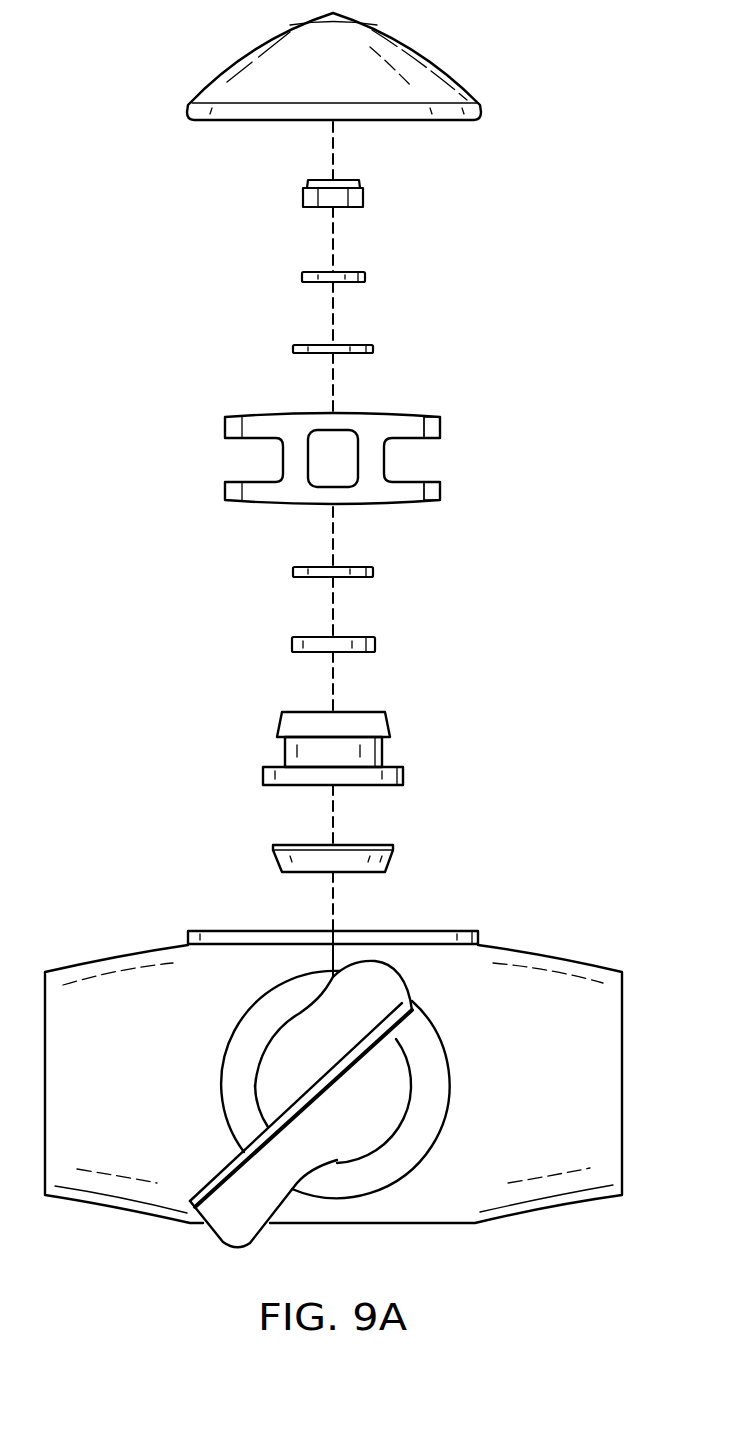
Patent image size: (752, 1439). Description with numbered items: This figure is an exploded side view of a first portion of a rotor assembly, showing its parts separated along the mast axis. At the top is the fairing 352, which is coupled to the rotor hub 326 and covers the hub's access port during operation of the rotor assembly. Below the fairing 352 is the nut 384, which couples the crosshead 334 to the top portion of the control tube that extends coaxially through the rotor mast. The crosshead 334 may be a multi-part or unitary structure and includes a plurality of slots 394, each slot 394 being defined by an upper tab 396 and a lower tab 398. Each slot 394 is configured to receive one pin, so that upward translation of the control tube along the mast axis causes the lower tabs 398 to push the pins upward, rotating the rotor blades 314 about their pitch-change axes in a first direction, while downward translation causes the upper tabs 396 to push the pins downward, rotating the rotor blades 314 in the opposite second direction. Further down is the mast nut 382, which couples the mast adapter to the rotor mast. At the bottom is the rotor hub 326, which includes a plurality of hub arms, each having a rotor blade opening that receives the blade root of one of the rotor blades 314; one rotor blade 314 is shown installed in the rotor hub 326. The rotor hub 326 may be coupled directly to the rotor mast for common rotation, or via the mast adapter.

The fairing 352 is at (214, 80).
The nut 384 is at (302, 197).
The crosshead 334 is at (250, 410).
The upper tab 396 is at (435, 417).
The slot 394 is at (418, 480).
The lower tab 398 is at (433, 502).
The mast nut 382 is at (263, 773).
The rotor hub 326 is at (124, 952).
The rotor blade 314 is at (230, 1253).